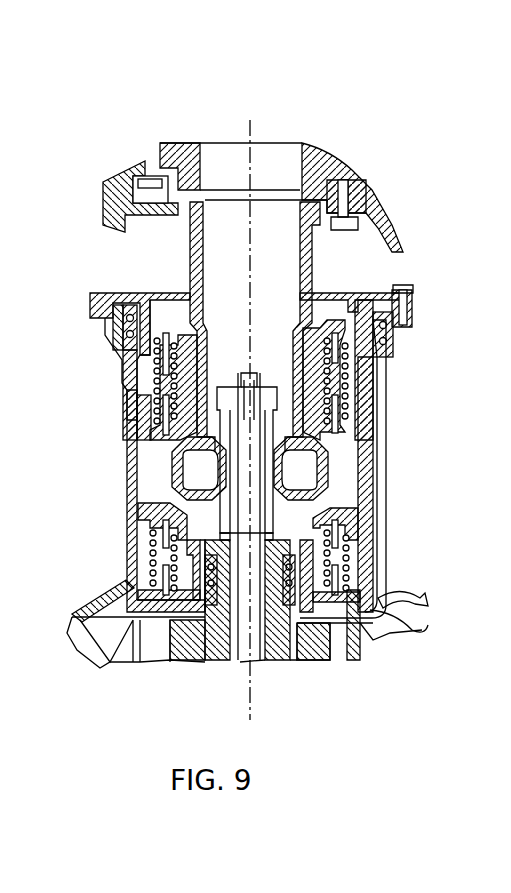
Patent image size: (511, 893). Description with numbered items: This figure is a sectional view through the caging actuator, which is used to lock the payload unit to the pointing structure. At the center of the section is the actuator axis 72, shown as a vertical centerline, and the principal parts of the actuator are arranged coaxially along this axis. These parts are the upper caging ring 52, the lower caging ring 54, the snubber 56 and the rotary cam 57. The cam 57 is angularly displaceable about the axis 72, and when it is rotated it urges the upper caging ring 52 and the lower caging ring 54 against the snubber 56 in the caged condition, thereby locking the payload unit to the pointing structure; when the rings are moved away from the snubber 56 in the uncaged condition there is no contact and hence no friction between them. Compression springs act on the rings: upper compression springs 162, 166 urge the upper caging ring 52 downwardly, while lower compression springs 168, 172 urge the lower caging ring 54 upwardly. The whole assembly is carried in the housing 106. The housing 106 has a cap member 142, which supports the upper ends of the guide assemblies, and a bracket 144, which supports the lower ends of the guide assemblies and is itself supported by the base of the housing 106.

The actuator axis 72 is at (252, 130).
The snubber 56 is at (190, 295).
The cap member 142 is at (332, 335).
The upper compression spring 162 is at (178, 386).
The upper caging ring 52 is at (175, 405).
The upper compression spring 166 is at (386, 384).
The rotary cam 57 is at (128, 492).
The lower compression spring 168 is at (152, 568).
The lower caging ring 54 is at (333, 538).
The lower compression spring 172 is at (340, 574).
The housing 106 is at (78, 624).
The bracket 144 is at (353, 612).